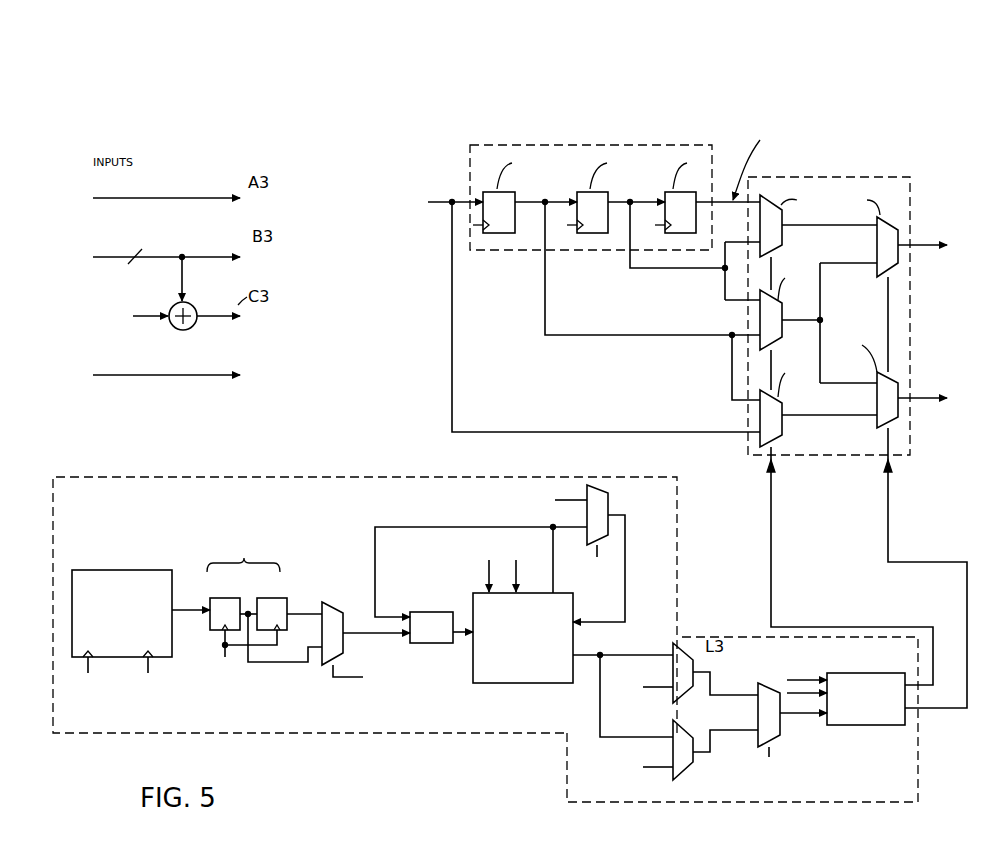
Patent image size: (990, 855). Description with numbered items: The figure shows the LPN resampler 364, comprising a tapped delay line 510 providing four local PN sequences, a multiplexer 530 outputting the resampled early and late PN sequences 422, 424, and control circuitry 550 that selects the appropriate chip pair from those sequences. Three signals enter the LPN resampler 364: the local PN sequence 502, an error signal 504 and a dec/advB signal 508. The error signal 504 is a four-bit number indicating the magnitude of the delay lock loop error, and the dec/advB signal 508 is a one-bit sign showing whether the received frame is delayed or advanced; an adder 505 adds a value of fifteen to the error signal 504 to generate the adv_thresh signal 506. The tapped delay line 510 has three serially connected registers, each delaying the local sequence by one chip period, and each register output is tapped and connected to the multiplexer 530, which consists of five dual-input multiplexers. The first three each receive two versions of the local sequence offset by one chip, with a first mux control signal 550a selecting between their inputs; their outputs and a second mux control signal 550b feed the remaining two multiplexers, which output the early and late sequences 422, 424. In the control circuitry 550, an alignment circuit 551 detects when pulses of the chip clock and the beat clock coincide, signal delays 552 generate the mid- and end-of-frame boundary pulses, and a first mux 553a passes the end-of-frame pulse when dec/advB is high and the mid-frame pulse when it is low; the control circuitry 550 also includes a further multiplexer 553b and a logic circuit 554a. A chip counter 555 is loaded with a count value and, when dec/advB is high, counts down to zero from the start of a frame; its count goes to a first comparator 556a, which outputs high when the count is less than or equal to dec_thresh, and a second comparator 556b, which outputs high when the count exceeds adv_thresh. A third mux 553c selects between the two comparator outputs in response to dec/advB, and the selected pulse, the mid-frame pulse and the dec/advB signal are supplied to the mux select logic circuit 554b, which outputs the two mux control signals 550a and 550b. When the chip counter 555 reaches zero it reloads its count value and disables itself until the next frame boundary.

The LPN resampler 364 is at (627, 88).
The local PN sequence 502 is at (192, 180).
The error signal 504 is at (168, 247).
The adder 505 is at (170, 326).
The adv_thresh signal 506 is at (230, 330).
The dec/advB signal 508 is at (195, 387).
The tapped delay line 510 is at (557, 140).
The multiplexer 530 is at (815, 170).
The resampled early PN sequence 422 is at (946, 415).
The resampled late PN sequence 424 is at (945, 252).
The resampler control circuitry 550 is at (300, 748).
The first mux control signal 550a is at (768, 512).
The second mux control signal 550b is at (885, 510).
The alignment circuit 551 is at (147, 567).
The signal delays 552 is at (230, 604).
The first mux 553a is at (333, 603).
The multiplexer 553b is at (612, 503).
The third mux 553c is at (782, 722).
The logic circuit 554a is at (440, 646).
The mux select logic circuit 554b is at (875, 728).
The chip counter 555 is at (525, 688).
The first comparator 556a is at (696, 663).
The second comparator 556b is at (697, 760).